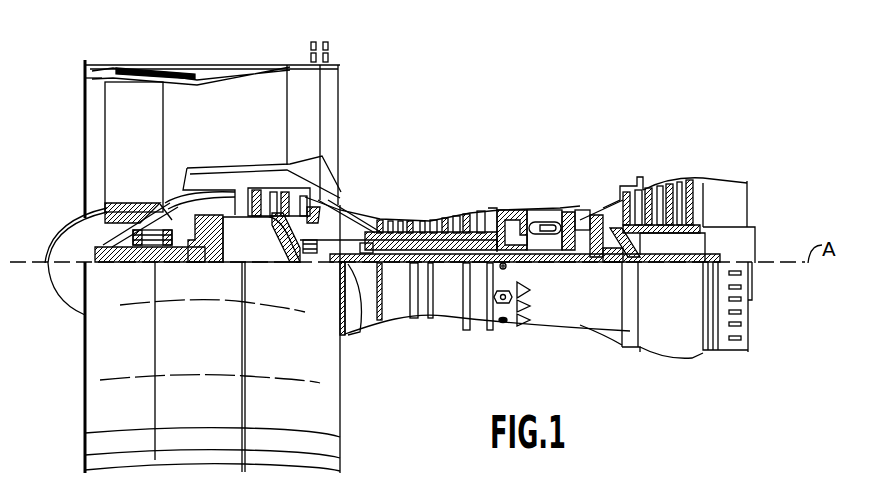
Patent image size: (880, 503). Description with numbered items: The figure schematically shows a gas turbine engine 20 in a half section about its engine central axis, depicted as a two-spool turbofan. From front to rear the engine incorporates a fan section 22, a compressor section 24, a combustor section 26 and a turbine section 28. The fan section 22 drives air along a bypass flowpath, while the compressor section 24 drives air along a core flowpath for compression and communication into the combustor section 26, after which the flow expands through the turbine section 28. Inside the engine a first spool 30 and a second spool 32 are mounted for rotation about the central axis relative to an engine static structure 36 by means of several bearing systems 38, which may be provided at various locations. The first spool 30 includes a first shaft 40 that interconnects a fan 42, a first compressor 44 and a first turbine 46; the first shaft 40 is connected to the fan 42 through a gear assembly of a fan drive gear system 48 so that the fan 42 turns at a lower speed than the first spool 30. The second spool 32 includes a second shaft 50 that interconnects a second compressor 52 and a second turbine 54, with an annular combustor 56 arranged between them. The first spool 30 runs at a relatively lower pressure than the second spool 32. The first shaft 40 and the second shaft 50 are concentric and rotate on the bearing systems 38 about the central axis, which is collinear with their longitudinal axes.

The gas turbine engine 20 is at (543, 105).
The fan section 22 is at (169, 58).
The compressor section 24 is at (368, 196).
The combustor section 26 is at (526, 184).
The turbine section 28 is at (632, 158).
The first spool 30 is at (450, 270).
The second spool 32 is at (480, 213).
The engine static structure 36 is at (478, 330).
The bearing systems 38 is at (312, 263).
The first shaft 40 is at (357, 328).
The fan 42 is at (152, 157).
The first compressor 44 is at (293, 190).
The first turbine 46 is at (670, 190).
The fan drive gear system 48 is at (220, 263).
The second shaft 50 is at (545, 265).
The second compressor 52 is at (431, 216).
The second turbine 54 is at (575, 210).
The annular combustor 56 is at (545, 213).